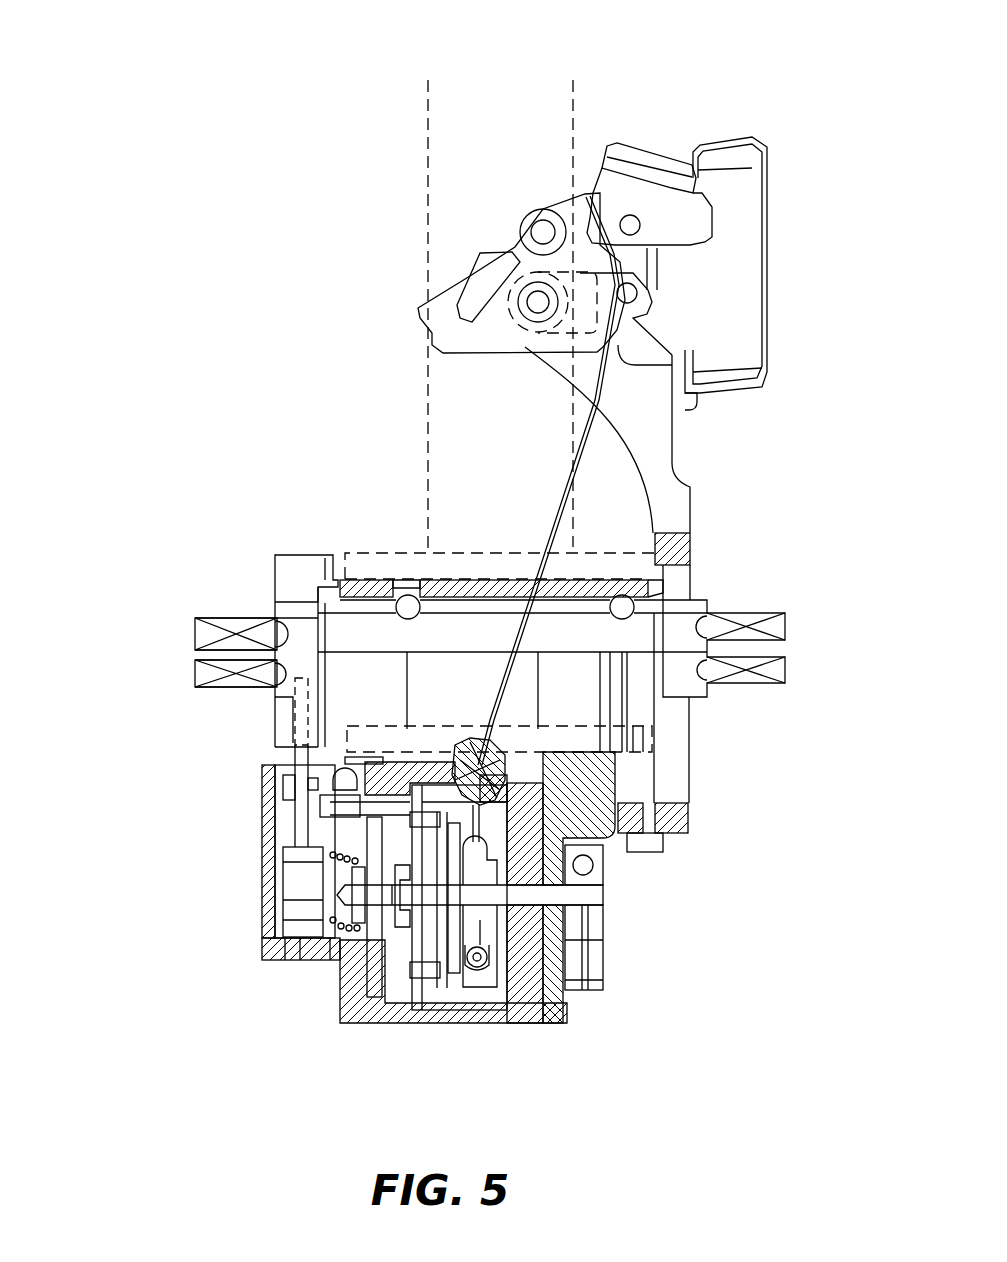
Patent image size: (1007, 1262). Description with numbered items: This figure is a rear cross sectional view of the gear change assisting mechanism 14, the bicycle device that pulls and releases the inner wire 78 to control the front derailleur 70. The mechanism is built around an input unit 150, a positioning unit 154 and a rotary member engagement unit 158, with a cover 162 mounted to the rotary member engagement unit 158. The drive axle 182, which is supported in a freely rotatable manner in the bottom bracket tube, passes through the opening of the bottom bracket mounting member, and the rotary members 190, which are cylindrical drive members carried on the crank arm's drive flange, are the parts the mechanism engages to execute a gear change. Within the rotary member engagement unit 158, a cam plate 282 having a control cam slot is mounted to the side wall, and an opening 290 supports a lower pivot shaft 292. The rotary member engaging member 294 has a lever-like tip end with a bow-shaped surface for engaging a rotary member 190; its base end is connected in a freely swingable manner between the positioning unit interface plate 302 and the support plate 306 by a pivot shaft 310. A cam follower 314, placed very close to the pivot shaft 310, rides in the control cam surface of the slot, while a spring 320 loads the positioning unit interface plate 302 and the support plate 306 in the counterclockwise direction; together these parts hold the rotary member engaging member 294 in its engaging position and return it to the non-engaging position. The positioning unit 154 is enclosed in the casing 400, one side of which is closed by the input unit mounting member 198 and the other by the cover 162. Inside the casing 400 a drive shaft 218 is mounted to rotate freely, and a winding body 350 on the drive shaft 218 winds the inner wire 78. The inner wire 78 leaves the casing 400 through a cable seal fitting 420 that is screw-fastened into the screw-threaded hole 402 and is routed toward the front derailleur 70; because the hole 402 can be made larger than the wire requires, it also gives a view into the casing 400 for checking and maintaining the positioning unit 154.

The gear change assisting mechanism 14 is at (617, 938).
The front derailleur 70 is at (775, 108).
The inner wire 78 is at (552, 530).
The input unit 150 is at (598, 1025).
The positioning unit 154 is at (495, 1037).
The rotary member engagement unit 158 is at (157, 893).
The cover 162 is at (320, 553).
The drive axle 182 is at (745, 625).
The rotary member 190 is at (283, 750).
The input unit mounting member 198 is at (605, 983).
The drive shaft 218 is at (575, 895).
The cam plate 282 is at (278, 925).
The opening 290 is at (303, 893).
The lower pivot shaft 292 is at (290, 870).
The rotary member engaging member 294 is at (345, 735).
The positioning unit interface plate 302 is at (298, 948).
The support plate 306 is at (290, 940).
The pivot shaft 310 is at (300, 830).
The cam follower 314 is at (275, 788).
The spring 320 is at (342, 938).
The winding body 350 is at (475, 970).
The casing 400 is at (540, 828).
The screw-threaded hole 402 is at (497, 713).
The cable seal fitting 420 is at (498, 775).